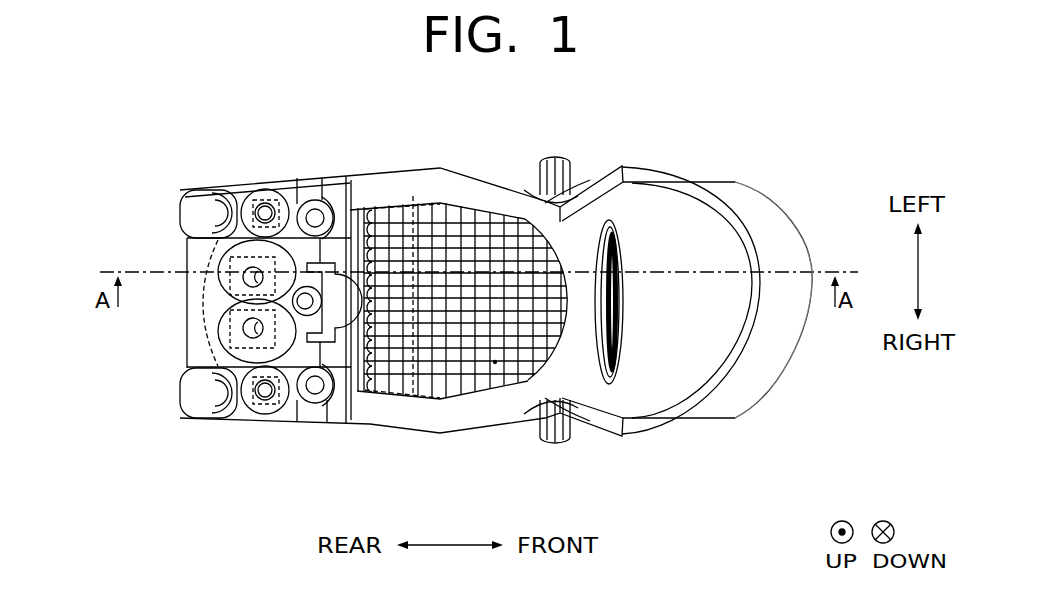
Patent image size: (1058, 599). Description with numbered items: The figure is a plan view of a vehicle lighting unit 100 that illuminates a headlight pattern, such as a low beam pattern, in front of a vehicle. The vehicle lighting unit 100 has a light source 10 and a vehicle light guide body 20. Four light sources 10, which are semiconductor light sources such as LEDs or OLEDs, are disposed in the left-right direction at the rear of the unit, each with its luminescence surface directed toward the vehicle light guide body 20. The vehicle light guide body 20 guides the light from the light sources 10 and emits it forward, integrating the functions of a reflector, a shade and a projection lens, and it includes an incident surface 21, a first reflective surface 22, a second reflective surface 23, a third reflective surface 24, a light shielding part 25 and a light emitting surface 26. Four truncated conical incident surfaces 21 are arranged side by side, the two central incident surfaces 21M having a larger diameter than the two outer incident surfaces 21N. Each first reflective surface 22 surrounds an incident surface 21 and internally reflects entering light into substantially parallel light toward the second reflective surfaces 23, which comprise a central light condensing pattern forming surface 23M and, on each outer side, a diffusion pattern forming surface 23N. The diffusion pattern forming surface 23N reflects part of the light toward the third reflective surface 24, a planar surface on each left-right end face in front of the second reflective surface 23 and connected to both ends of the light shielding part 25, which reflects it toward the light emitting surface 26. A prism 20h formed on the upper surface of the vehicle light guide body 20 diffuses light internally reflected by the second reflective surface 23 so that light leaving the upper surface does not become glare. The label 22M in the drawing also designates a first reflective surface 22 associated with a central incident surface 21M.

The vehicle lighting unit 100 is at (789, 141).
The light source 10 is at (253, 180).
The vehicle light guide body 20 is at (407, 446).
The prism 20h is at (495, 364).
The incident surface 21 is at (226, 281).
The central incident surface 21M is at (236, 298).
The outer incident surface 21N is at (266, 208).
The first reflective surface 22 is at (298, 210).
The second terminal main part 22M is at (243, 276).
The second reflective surface 23 is at (153, 296).
The light condensing pattern forming surface 23M is at (183, 302).
The diffusion pattern forming surface 23N is at (198, 190).
The third reflective surface 24 is at (484, 192).
The light shielding part 25 is at (413, 196).
The light emitting surface 26 is at (778, 385).